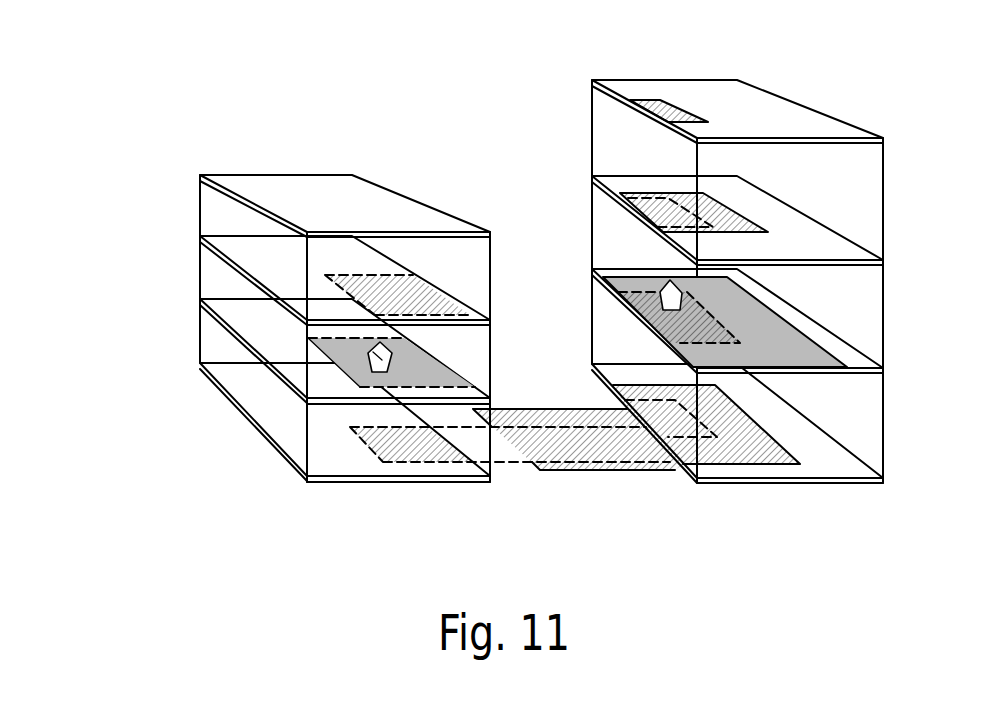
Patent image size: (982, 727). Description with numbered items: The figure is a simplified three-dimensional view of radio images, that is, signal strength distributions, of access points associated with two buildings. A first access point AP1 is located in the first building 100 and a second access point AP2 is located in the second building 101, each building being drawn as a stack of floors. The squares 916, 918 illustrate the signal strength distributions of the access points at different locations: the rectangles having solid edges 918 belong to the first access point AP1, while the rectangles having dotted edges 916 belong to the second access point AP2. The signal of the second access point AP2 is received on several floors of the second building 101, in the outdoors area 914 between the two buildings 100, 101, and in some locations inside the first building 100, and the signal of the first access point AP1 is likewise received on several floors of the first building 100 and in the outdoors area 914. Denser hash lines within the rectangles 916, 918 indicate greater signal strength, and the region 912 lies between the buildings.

The first building 100 is at (813, 112).
The second building 101 is at (315, 173).
The interconnect region 912 is at (556, 357).
The outdoors area 914 is at (288, 427).
The squares illustrating signal strength distributions 916 is at (387, 277).
The squares illustrating signal strength distributions 918 is at (652, 100).
The first access point AP1 is at (660, 291).
The second access point AP2 is at (374, 353).